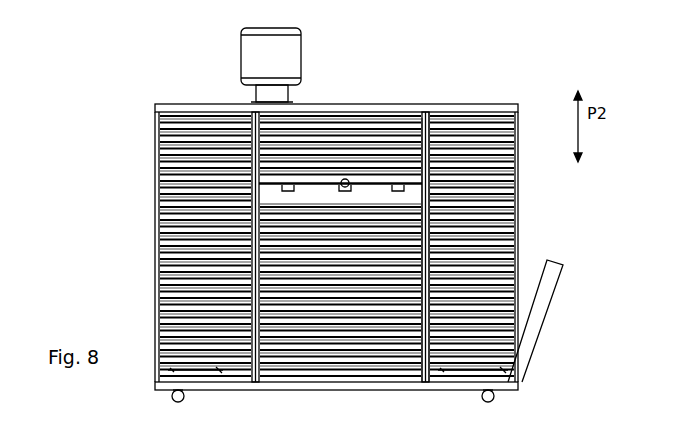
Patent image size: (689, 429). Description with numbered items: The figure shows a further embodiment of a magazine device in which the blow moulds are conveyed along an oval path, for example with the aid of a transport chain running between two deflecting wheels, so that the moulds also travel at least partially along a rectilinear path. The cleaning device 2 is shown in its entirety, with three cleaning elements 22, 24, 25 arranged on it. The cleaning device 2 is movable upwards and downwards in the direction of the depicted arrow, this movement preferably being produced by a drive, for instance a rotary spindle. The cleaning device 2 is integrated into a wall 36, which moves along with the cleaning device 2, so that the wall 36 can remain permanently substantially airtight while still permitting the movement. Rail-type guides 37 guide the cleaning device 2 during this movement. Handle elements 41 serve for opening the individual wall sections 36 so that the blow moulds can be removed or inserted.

The cleaning device 2 is at (367, 183).
The cleaning element 22 is at (280, 173).
The cleaning element 24 is at (340, 172).
The cleaning element 25 is at (420, 125).
The wall 36 is at (447, 175).
The rail-type guides 37 is at (417, 288).
The handle elements 41 is at (210, 361).